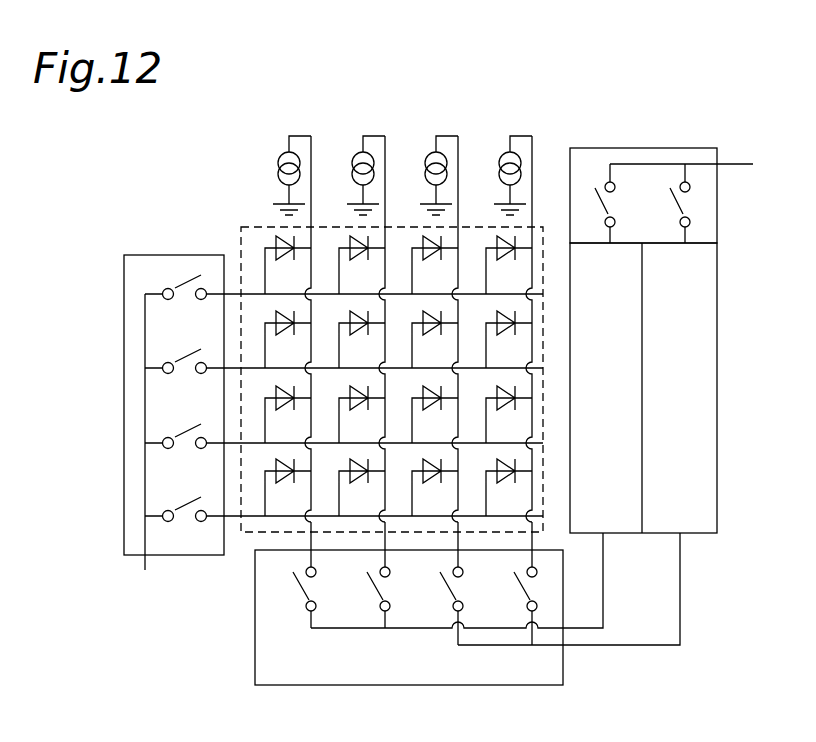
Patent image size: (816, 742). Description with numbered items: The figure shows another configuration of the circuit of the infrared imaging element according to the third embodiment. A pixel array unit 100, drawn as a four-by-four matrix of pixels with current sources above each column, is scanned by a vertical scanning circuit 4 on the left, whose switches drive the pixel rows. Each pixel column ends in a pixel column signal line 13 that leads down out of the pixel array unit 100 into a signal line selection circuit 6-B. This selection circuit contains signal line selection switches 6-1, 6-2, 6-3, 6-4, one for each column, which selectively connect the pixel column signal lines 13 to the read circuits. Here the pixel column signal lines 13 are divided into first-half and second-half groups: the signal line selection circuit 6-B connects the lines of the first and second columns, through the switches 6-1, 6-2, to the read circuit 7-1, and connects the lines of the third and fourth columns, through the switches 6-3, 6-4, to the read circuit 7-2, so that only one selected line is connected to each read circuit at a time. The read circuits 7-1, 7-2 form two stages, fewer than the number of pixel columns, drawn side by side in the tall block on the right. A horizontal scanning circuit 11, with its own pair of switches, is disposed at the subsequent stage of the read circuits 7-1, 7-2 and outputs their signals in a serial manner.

The vertical scanning circuit 4 is at (163, 254).
The pixel array unit 100 is at (254, 222).
The pixel column signal line 13 is at (300, 539).
The signal line selection circuit 6-B is at (253, 650).
The signal line selection switch 6-1 is at (308, 613).
The signal line selection switch 6-2 is at (381, 613).
The signal line selection switch 6-3 is at (457, 623).
The signal line selection switch 6-4 is at (530, 623).
The horizontal scanning circuit 11 is at (719, 228).
The read circuit 7-2 is at (717, 458).
The read circuit 7-1 is at (625, 533).